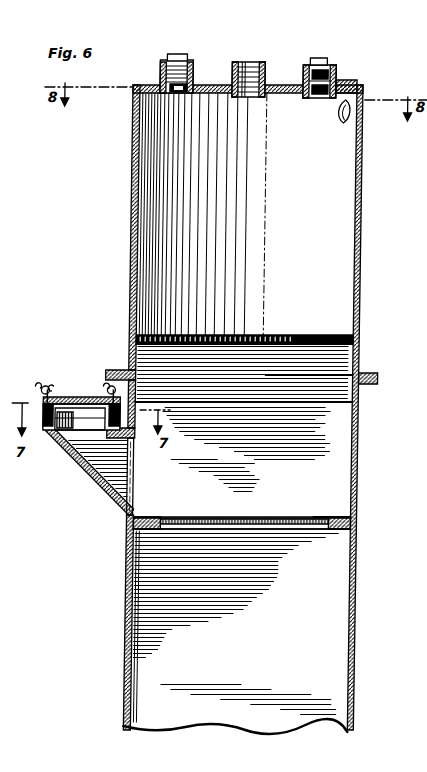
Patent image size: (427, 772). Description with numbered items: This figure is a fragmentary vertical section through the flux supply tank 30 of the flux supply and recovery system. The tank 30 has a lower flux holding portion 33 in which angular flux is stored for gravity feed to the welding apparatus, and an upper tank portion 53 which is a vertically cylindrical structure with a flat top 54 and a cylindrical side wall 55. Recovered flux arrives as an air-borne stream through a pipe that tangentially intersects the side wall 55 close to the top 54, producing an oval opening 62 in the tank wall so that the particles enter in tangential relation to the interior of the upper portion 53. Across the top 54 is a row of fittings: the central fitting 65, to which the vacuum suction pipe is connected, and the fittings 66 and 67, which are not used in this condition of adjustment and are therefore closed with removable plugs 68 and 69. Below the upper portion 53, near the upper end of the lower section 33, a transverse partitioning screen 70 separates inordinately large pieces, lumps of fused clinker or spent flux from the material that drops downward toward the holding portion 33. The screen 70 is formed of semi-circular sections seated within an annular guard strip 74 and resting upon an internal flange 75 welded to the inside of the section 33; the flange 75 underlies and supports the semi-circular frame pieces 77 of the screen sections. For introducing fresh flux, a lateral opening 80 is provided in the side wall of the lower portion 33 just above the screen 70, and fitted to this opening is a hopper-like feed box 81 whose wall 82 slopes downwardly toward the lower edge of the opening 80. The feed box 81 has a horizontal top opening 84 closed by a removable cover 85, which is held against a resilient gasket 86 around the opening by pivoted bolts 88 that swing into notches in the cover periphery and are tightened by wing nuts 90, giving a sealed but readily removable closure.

The supply tank 30 is at (368, 452).
The lower flux holding portion 33 is at (355, 678).
The upper tank portion 53 is at (359, 236).
The flat top 54 is at (207, 84).
The cylindrical side wall 55 is at (365, 184).
The oval opening 62 is at (344, 123).
The central fitting 65 is at (263, 70).
The fitting 66 is at (342, 80).
The fitting 67 is at (162, 72).
The removable plug 68 is at (318, 58).
The removable plug 69 is at (174, 54).
The partitioning screen 70 is at (282, 510).
The annular guard strip 74 is at (341, 515).
The internal flange 75 is at (337, 531).
The semi-circular frame pieces 77 is at (229, 521).
The lateral opening 80 is at (140, 488).
The feed box 81 is at (137, 440).
The sloping wall 82 is at (84, 463).
The horizontal top opening 84 is at (58, 430).
The removable cover 85 is at (82, 397).
The resilient gasket 86 is at (52, 386).
The pivoted bolts 88 is at (140, 404).
The wing nuts 90 is at (112, 384).